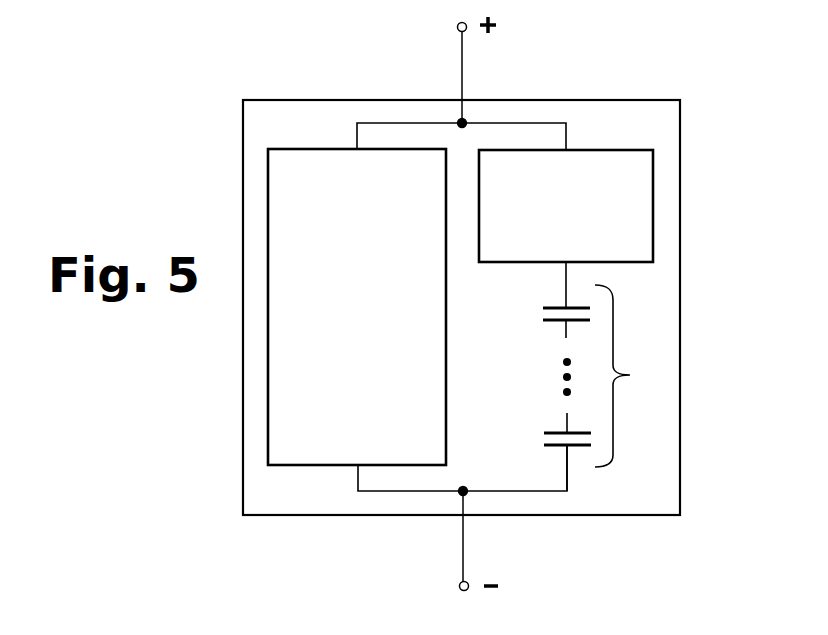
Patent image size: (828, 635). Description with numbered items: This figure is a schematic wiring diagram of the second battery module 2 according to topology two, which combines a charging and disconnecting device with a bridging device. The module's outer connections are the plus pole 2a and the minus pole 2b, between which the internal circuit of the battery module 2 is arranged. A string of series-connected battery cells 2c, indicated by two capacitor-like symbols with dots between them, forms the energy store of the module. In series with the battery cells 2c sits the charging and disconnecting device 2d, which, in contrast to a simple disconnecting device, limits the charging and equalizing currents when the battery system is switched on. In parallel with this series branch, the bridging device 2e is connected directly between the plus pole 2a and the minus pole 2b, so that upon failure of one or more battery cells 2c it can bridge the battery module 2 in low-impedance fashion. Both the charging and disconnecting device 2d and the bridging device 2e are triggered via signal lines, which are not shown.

The second battery module 2 is at (665, 123).
The positive terminal 2a is at (456, 27).
The negative terminal 2b is at (458, 586).
The battery cells 2c is at (606, 376).
The charging and disconnecting device 2d is at (493, 252).
The bridging device 2e is at (435, 438).